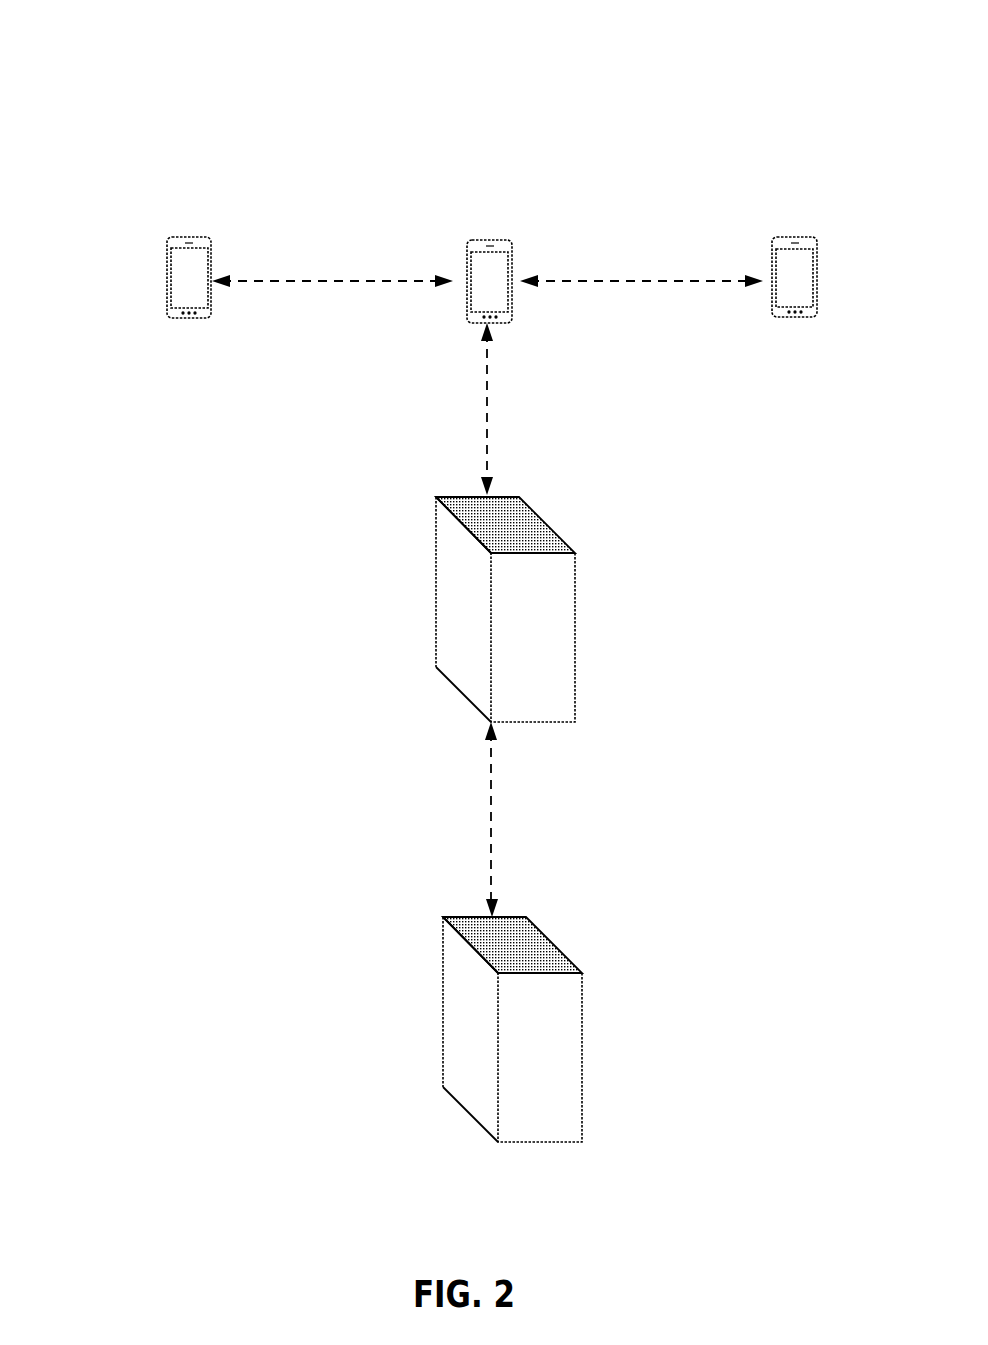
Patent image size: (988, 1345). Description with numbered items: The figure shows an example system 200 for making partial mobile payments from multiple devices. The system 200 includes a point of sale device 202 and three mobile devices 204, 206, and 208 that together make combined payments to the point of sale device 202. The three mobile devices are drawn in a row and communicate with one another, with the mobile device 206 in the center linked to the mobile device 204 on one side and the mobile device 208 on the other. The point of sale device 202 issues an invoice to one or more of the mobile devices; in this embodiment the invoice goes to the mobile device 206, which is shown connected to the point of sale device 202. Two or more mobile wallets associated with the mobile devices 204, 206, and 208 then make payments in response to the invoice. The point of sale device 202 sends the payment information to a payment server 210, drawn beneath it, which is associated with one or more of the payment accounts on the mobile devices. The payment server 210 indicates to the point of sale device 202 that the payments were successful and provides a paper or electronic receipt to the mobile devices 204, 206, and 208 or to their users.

The system 200 is at (117, 40).
The point of sale device 202 is at (575, 553).
The mobile device 204 is at (210, 237).
The mobile device 206 is at (508, 240).
The mobile device 208 is at (815, 237).
The payment server 210 is at (582, 973).